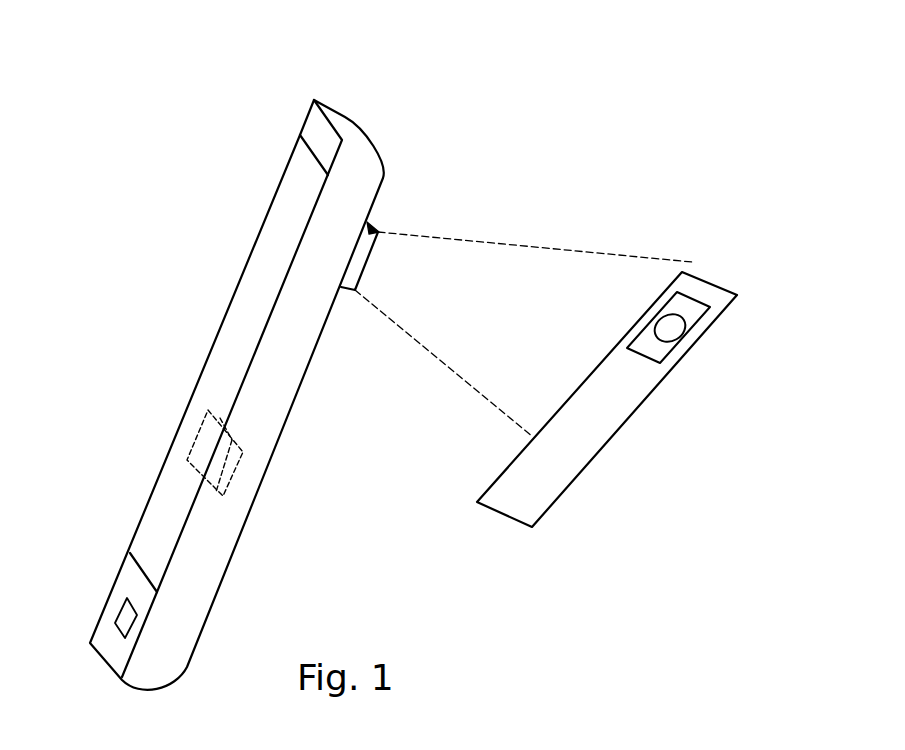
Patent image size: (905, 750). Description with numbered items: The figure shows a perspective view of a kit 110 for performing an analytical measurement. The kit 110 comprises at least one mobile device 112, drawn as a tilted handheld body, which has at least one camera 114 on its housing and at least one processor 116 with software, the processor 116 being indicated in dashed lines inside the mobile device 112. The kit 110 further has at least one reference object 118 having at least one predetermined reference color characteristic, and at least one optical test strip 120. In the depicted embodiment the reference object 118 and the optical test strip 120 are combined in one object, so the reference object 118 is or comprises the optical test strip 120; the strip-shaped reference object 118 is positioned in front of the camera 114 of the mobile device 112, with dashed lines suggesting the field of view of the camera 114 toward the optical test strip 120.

The kit 110 is at (577, 168).
The mobile device 112 is at (384, 123).
The camera 114 is at (367, 260).
The processor 116 is at (233, 468).
The reference object 118 is at (720, 268).
The optical test strip 120 is at (537, 478).